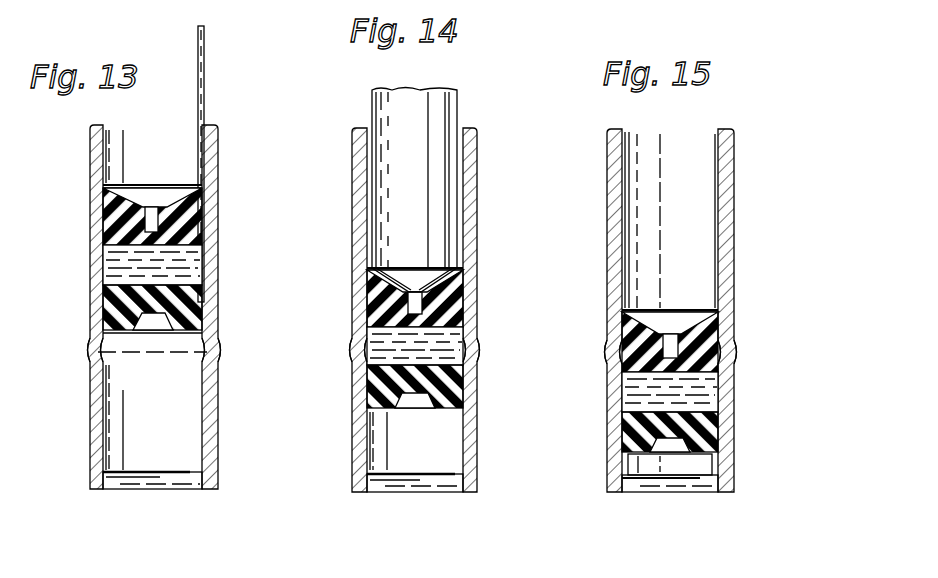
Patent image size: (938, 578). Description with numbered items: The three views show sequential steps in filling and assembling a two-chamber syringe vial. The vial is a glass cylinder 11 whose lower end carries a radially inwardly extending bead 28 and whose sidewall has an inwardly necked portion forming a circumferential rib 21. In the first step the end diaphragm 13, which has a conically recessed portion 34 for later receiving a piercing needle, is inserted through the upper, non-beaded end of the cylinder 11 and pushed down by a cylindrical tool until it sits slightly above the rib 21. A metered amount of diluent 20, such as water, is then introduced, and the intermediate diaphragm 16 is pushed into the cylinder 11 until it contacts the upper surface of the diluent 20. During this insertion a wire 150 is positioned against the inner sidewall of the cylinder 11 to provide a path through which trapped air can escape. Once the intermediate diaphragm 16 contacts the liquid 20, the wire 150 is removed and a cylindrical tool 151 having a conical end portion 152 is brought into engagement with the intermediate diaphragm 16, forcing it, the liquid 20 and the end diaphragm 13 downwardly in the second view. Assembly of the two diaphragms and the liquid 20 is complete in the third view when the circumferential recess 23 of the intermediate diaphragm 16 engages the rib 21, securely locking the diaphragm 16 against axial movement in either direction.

In FIG. 13, the glass cylinder 11 is at (219, 183).
In FIG. 14, the glass cylinder 11 is at (478, 184).
In FIG. 15, the glass cylinder 11 is at (735, 246).
In FIG. 13, the end diaphragm 13 is at (105, 305).
In FIG. 14, the end diaphragm 13 is at (468, 386).
In FIG. 15, the end diaphragm 13 is at (712, 427).
In FIG. 13, the intermediate diaphragm 16 is at (104, 194).
In FIG. 14, the intermediate diaphragm 16 is at (367, 290).
In FIG. 15, the intermediate diaphragm 16 is at (712, 326).
In FIG. 13, the diluent 20 is at (105, 265).
In FIG. 14, the diluent 20 is at (466, 355).
In FIG. 15, the diluent 20 is at (705, 392).
In FIG. 13, the circumferential rib 21 is at (114, 348).
In FIG. 14, the circumferential rib 21 is at (360, 358).
In FIG. 15, the circumferential rib 21 is at (626, 348).
In FIG. 13, the circumferential recess 23 is at (105, 218).
In FIG. 14, the circumferential recess 23 is at (466, 300).
In FIG. 15, the circumferential recess 23 is at (735, 355).
In FIG. 13, the bead 28 is at (108, 478).
In FIG. 14, the bead 28 is at (372, 480).
In FIG. 15, the bead 28 is at (626, 482).
In FIG. 13, the conically recessed portion 34 is at (155, 333).
In FIG. 13, the wire 150 is at (205, 97).
In FIG. 14, the cylindrical tool 151 is at (458, 112).
In FIG. 14, the conical end portion 152 is at (452, 282).